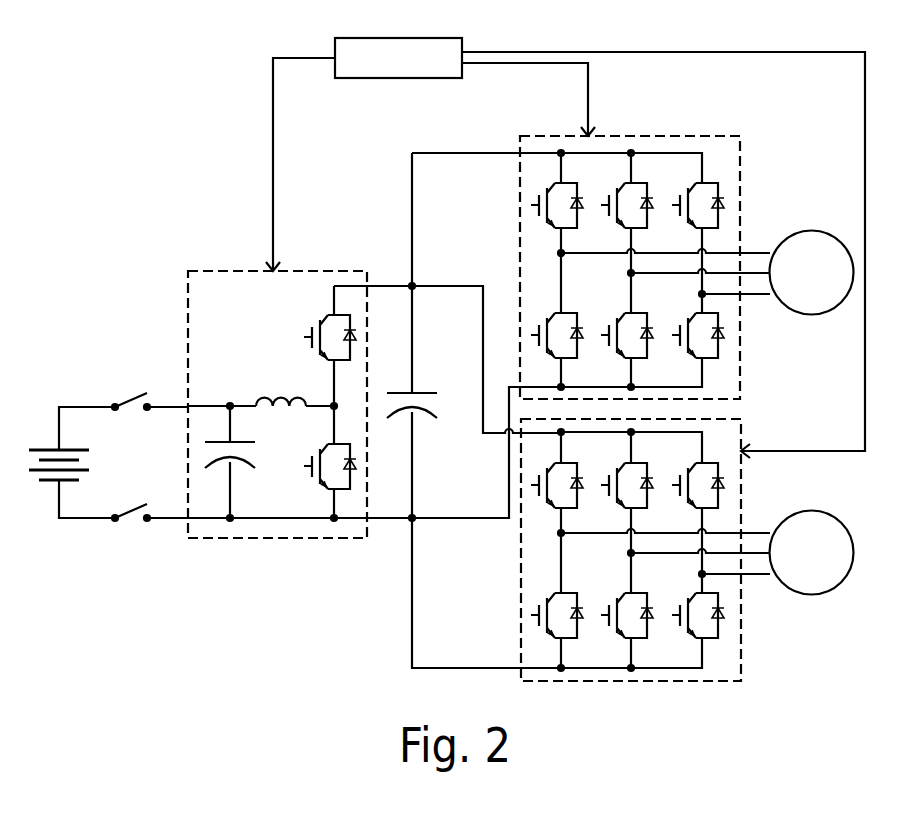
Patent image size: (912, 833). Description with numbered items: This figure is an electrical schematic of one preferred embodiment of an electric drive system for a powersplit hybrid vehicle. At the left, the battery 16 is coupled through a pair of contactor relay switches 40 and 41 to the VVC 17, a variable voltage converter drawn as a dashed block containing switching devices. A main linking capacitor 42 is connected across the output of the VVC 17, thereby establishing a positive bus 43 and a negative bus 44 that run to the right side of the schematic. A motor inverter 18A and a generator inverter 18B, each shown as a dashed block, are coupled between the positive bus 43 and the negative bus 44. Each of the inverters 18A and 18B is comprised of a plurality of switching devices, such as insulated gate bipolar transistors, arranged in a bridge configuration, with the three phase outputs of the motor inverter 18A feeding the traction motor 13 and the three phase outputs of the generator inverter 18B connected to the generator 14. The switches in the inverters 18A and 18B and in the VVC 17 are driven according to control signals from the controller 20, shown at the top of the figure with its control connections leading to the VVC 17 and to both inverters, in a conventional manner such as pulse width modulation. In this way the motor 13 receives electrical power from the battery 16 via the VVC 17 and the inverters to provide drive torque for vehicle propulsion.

The traction motor 13 is at (812, 316).
The generator 14 is at (811, 596).
The battery pack 16 is at (43, 448).
The VVC 17 is at (222, 270).
The motor inverter 18A is at (696, 136).
The generator inverter 18B is at (691, 682).
The controller 20 is at (365, 38).
The contactor relay switch 40 is at (125, 399).
The contactor relay switch 41 is at (130, 522).
The main linking capacitor 42 is at (422, 392).
The positive bus 43 is at (387, 284).
The negative bus 44 is at (387, 521).